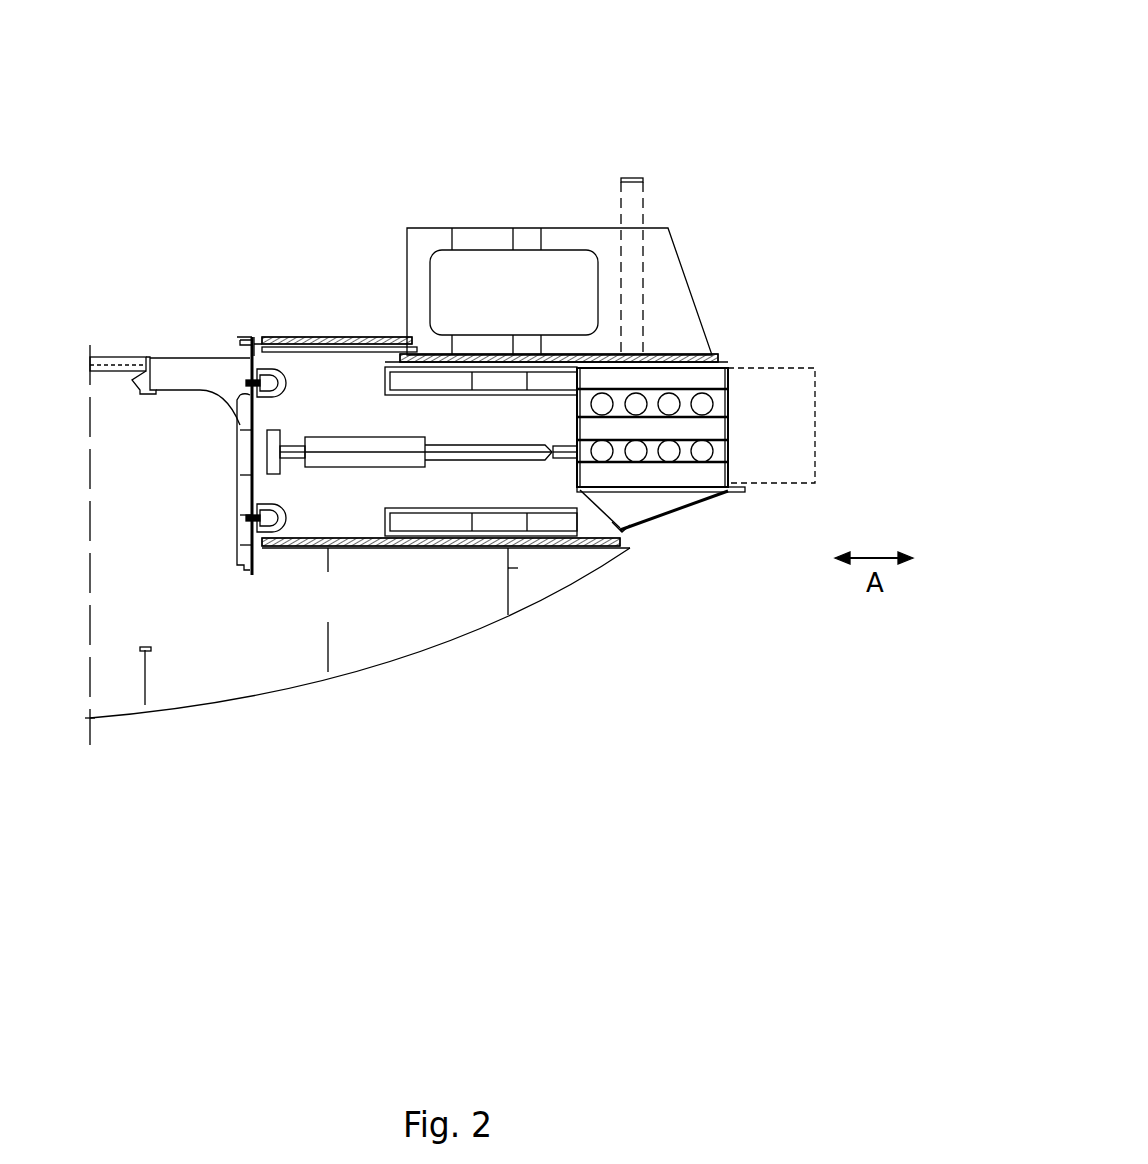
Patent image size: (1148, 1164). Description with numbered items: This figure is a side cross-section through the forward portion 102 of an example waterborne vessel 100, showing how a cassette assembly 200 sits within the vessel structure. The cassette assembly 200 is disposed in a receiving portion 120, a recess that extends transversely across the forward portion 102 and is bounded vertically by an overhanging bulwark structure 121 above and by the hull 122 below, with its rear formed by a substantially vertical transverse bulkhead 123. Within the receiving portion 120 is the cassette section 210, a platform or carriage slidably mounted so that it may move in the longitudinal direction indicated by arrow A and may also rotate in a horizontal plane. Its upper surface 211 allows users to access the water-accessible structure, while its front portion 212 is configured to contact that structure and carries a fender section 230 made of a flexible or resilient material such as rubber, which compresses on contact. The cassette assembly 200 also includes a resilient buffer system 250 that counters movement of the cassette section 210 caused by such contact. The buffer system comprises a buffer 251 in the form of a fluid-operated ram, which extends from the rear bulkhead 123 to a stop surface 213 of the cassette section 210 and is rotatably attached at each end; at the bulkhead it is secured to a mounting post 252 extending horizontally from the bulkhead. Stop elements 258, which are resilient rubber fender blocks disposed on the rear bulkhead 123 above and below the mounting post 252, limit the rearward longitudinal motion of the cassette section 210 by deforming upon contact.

The waterborne vessel 100 is at (690, 110).
The forward portion 102 is at (832, 336).
The receiving portion 120 is at (346, 385).
The overhanging bulwark structure 121 is at (424, 243).
The hull 122 is at (400, 590).
The transverse bulkhead 123 is at (252, 490).
The cassette assembly 200 is at (750, 543).
The cassette section 210 is at (690, 502).
The upper surface 211 is at (486, 358).
The front portion 212 is at (728, 467).
The stop surface 213 is at (622, 532).
The fender section 230 is at (815, 438).
The resilient buffer system 250 is at (345, 520).
The buffer 251 is at (290, 395).
The mounting post 252 is at (265, 452).
The stop element 258 is at (247, 358).